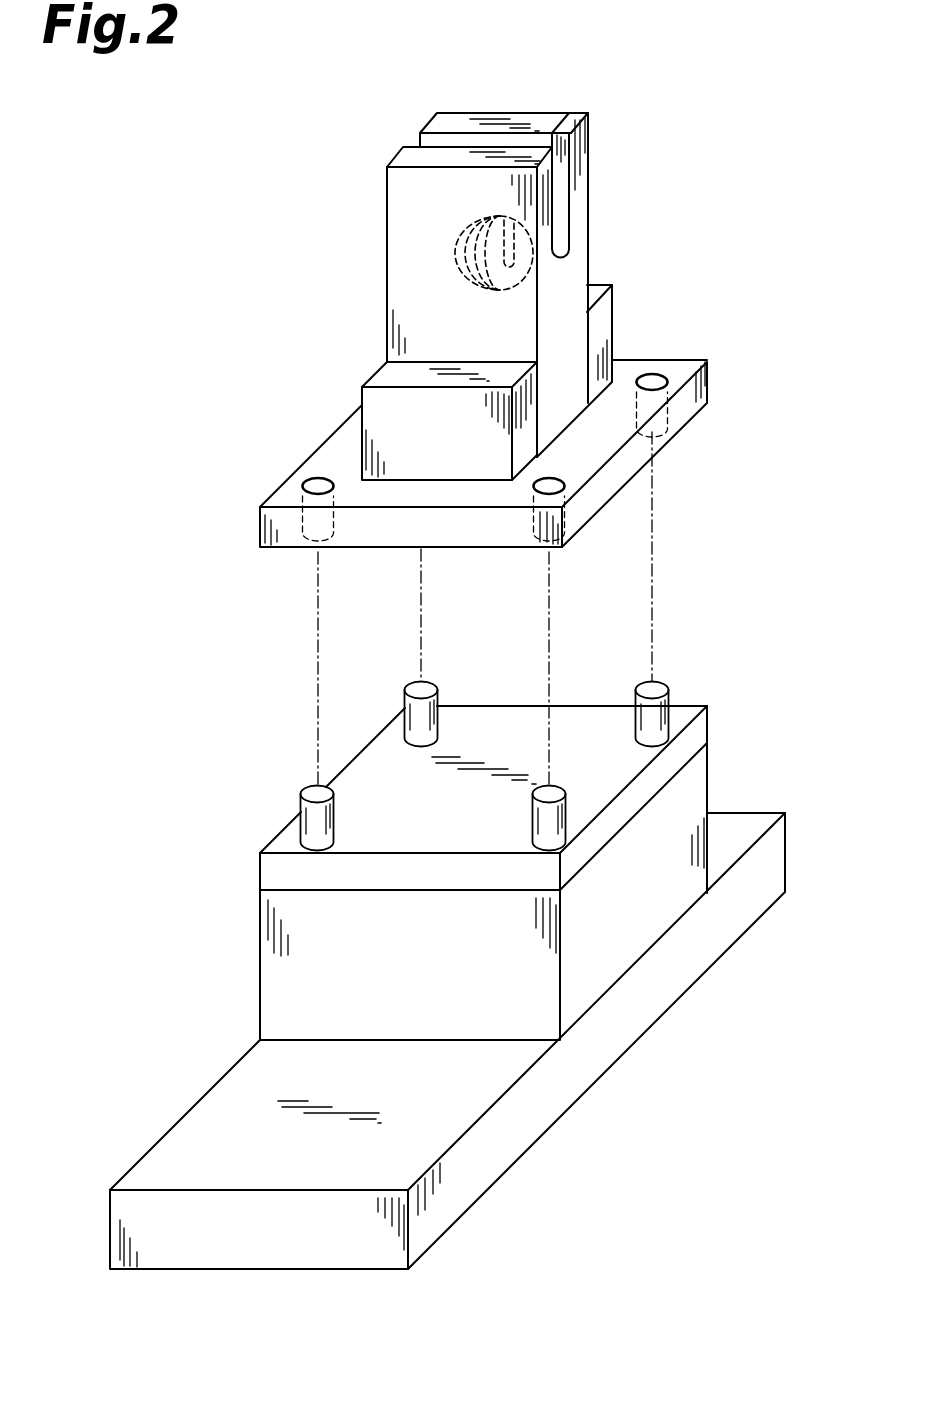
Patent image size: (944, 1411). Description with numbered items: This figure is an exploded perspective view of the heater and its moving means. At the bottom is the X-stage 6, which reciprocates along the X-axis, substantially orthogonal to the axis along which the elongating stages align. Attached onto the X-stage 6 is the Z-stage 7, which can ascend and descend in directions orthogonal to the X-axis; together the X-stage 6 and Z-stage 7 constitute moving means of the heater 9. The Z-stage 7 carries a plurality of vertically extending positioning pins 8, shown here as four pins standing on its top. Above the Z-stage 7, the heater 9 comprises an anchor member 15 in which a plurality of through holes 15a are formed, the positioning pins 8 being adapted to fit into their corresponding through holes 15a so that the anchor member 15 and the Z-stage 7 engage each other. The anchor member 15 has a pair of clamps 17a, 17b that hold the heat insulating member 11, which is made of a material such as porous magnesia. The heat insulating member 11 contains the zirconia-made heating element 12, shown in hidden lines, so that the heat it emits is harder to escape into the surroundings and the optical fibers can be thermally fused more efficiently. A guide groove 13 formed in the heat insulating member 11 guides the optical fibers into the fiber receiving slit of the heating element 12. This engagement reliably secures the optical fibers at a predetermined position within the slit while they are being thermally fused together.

The X-stage 6 is at (276, 1253).
The Z-stage 7 is at (630, 943).
The positioning pins 8 is at (407, 686).
The heater 9 is at (773, 113).
The heat insulating member 11 is at (577, 260).
The heating element 12 is at (533, 215).
The guide groove 13 is at (551, 133).
The anchor member 15 is at (683, 405).
The through holes 15a is at (663, 368).
The clamp 17a is at (598, 322).
The clamp 17b is at (373, 405).